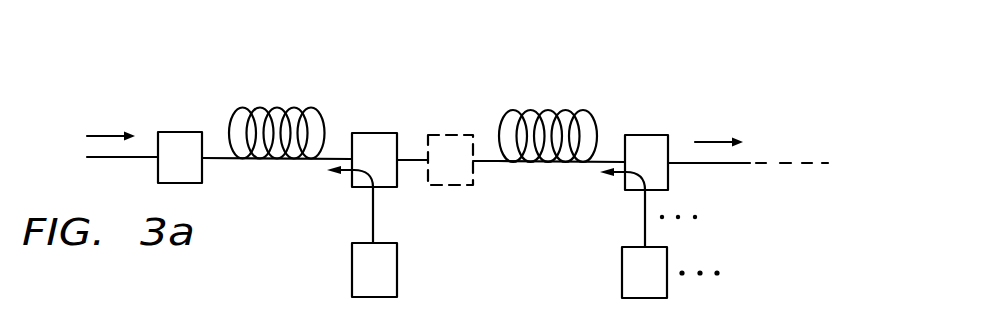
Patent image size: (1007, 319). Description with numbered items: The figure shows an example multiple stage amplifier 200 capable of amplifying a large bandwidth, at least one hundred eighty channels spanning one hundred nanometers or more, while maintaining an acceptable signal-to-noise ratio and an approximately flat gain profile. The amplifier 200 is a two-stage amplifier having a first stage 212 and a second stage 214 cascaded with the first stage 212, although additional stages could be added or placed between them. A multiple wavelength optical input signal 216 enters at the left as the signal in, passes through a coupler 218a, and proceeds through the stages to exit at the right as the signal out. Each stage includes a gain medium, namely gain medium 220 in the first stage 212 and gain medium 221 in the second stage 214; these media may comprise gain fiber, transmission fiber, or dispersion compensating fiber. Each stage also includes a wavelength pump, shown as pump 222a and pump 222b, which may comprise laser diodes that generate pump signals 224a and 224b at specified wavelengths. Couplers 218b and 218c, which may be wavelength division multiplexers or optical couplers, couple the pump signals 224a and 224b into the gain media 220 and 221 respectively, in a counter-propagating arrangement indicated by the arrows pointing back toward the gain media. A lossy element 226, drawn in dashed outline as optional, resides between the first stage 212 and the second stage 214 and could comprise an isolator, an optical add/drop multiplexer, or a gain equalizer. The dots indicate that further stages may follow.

The multiple stage amplifier 200 is at (313, 48).
The first stage 212 is at (269, 173).
The second stage 214 is at (532, 177).
The multiple wavelength optical input signal 216 is at (726, 116).
The coupler 218a is at (181, 132).
The coupler 218b is at (373, 133).
The coupler 218c is at (645, 135).
The gain medium 220 is at (258, 106).
The gain medium 221 is at (566, 108).
The wavelength pump 222a is at (352, 268).
The wavelength pump 222b is at (622, 273).
The pump signal 224a is at (373, 214).
The pump signal 224b is at (645, 220).
The lossy element 226 is at (452, 135).